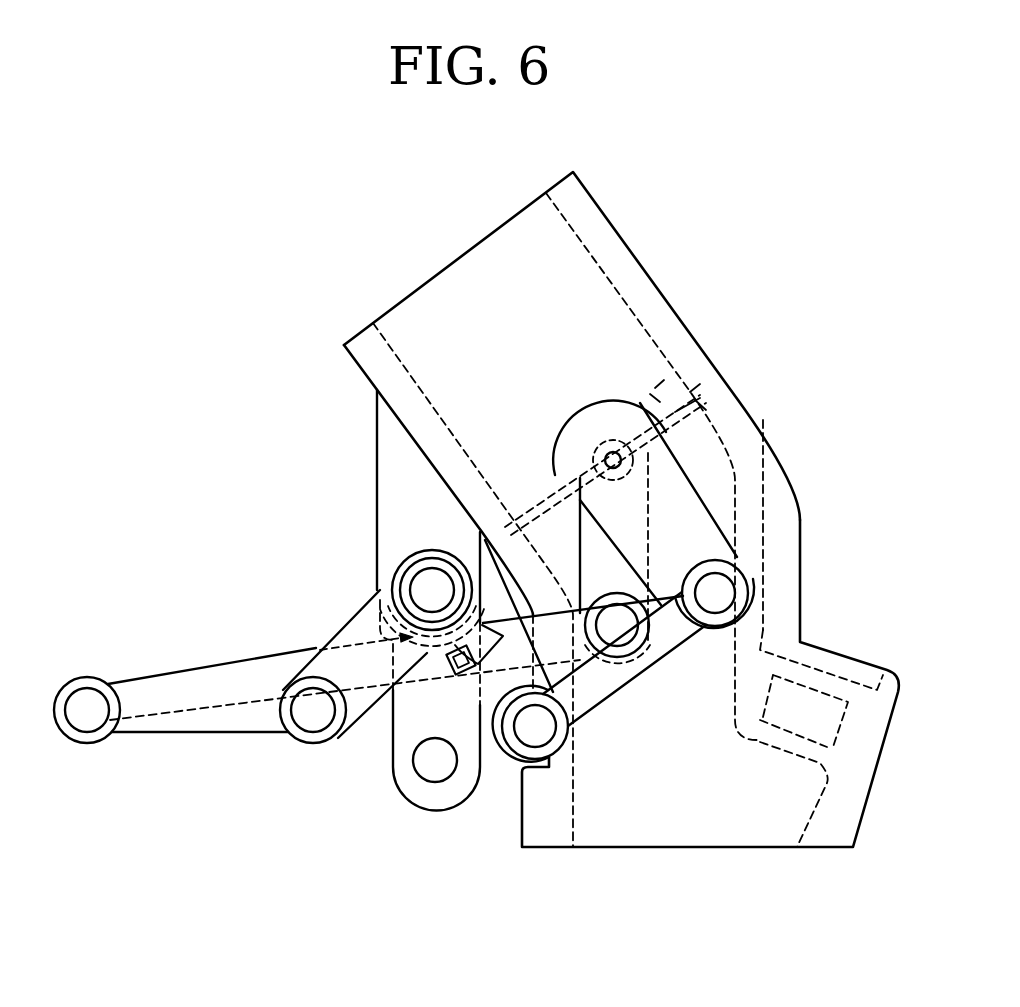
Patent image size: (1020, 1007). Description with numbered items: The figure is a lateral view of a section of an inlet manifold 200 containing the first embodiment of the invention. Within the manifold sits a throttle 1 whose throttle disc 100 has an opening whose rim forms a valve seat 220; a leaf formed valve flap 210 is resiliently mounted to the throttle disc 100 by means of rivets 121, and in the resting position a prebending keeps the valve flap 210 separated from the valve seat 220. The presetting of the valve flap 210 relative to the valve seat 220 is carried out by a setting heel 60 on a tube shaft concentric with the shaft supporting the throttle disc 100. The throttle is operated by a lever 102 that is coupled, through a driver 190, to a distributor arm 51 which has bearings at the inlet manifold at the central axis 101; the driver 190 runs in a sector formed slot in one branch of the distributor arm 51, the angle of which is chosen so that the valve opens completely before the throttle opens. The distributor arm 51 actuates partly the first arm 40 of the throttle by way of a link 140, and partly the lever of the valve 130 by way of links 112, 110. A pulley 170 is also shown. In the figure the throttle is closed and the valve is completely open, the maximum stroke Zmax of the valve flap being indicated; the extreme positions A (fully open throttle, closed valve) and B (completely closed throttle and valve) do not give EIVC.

The throttle 1 is at (634, 455).
The first arm 40 is at (700, 510).
The distributor arm 51 is at (345, 618).
The setting heel 60 is at (590, 455).
The throttle disc 100 is at (675, 413).
The central axis 101 is at (430, 588).
The lever 102 is at (423, 787).
The link 110 is at (182, 677).
The link 112 is at (193, 708).
The rivets 121 is at (575, 508).
The lever of the valve 130 is at (612, 578).
The link 140 is at (617, 667).
The pulley 170 is at (377, 590).
The driver 190 is at (463, 668).
The inlet manifold 200 is at (632, 258).
The valve flap 210 is at (655, 388).
The valve seat 220 is at (690, 392).
The maximum stroke Zmax is at (690, 390).
The fully open throttle position A is at (435, 760).
The completely closed throttle position B is at (430, 825).